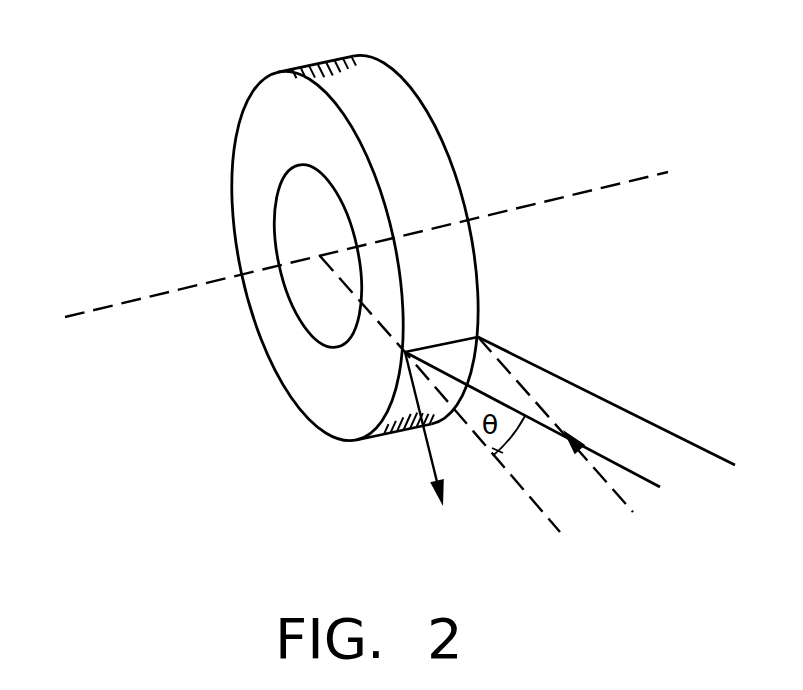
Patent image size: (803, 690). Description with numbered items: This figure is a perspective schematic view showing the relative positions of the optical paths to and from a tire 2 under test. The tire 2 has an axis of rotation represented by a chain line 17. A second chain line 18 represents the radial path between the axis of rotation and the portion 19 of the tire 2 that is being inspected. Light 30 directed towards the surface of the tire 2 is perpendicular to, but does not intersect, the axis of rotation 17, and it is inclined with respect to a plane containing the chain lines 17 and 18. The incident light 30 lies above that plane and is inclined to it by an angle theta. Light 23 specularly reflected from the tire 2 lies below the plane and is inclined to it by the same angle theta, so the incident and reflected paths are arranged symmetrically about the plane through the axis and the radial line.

The tire 2 is at (410, 88).
The chain line 17 is at (580, 195).
The second chain line 18 is at (350, 286).
The portion 19 is at (455, 335).
The light 30 is at (595, 418).
The light 23 is at (428, 455).